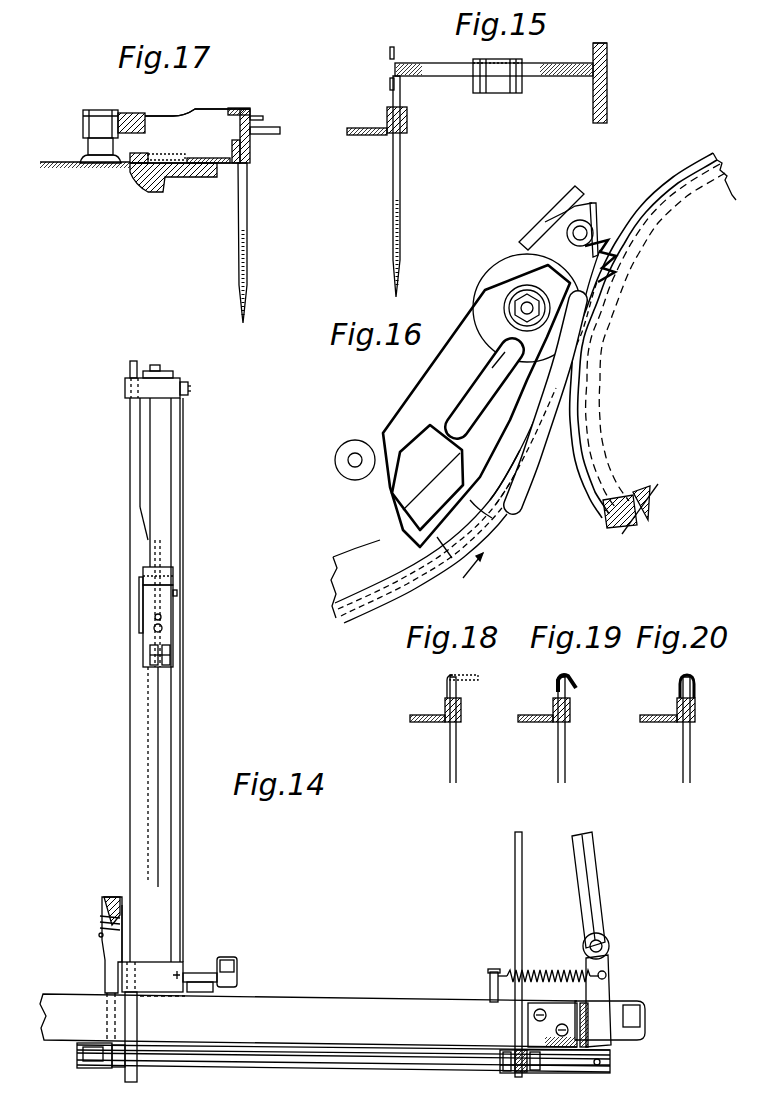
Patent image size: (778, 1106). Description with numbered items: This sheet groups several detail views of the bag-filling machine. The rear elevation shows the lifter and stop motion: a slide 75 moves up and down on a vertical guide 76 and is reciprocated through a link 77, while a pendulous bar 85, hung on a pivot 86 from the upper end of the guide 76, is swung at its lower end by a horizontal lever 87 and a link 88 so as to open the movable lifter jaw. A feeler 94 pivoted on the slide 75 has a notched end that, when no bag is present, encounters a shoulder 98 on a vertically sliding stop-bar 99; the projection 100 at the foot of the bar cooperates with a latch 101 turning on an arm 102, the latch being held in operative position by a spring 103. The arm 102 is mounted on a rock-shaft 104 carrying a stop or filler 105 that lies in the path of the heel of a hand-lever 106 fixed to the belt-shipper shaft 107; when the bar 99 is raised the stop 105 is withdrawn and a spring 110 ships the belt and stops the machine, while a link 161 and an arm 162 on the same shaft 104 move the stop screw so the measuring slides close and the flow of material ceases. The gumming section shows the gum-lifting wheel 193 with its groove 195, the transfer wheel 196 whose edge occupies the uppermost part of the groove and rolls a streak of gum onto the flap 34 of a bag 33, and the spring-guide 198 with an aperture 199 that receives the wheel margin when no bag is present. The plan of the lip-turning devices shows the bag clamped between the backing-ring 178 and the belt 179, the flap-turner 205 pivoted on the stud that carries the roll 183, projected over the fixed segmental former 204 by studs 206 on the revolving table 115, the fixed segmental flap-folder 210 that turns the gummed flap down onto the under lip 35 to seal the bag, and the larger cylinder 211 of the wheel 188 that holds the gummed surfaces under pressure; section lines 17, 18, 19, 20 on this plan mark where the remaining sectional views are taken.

In FIG. 16, the section line 17 is at (341, 447).
In FIG. 16, the section line 18 is at (505, 492).
In FIG. 16, the section line 19 is at (550, 476).
In FIG. 16, the section line 20 is at (590, 407).
In FIG. 17, the bag 33 is at (249, 220).
In FIG. 18, the bag 33 is at (458, 760).
In FIG. 19, the bag 33 is at (566, 760).
In FIG. 20, the bag 33 is at (690, 762).
In FIG. 17, the flap 34 is at (264, 115).
In FIG. 16, the flap 34 is at (457, 572).
In FIG. 18, the flap 34 is at (462, 681).
In FIG. 18, the under lip 35 is at (459, 688).
In FIG. 14, the slide 75 is at (165, 612).
In FIG. 14, the vertical guide 76 is at (160, 465).
In FIG. 14, the link 77 is at (160, 848).
In FIG. 14, the pendulous bar 85 is at (184, 448).
In FIG. 14, the pivot 86 is at (191, 388).
In FIG. 14, the horizontal lever 87 is at (237, 977).
In FIG. 14, the link 88 is at (232, 958).
In FIG. 14, the feeler 94 is at (140, 612).
In FIG. 14, the shoulder 98 is at (143, 570).
In FIG. 14, the stop-bar 99 is at (130, 746).
In FIG. 14, the projection 100 is at (123, 895).
In FIG. 14, the latch 101 is at (108, 900).
In FIG. 14, the arm 102 is at (103, 946).
In FIG. 14, the spring 103 is at (100, 921).
In FIG. 14, the rock-shaft 104 is at (275, 1073).
In FIG. 14, the stop or filler 105 is at (595, 1030).
In FIG. 14, the hand-lever 106 is at (600, 905).
In FIG. 14, the shaft 107 is at (609, 947).
In FIG. 14, the spring 110 is at (538, 970).
In FIG. 17, the wheel or table 115 is at (173, 188).
In FIG. 14, the link 161 is at (515, 899).
In FIG. 14, the arm 162 is at (535, 1074).
In FIG. 17, the backing-ring 178 is at (226, 158).
In FIG. 15, the backing-ring 178 is at (388, 120).
In FIG. 16, the backing-ring 178 is at (345, 575).
In FIG. 15, the belt 179 is at (408, 124).
In FIG. 16, the belt 179 is at (336, 622).
In FIG. 16, the roller 183 is at (500, 282).
In FIG. 16, the wheel 188 is at (636, 518).
In FIG. 15, the gum-lifting wheel 193 is at (608, 93).
In FIG. 15, the groove 195 is at (605, 60).
In FIG. 15, the transfer wheel 196 is at (431, 63).
In FIG. 15, the spring-guide 198 is at (391, 50).
In FIG. 15, the aperture 199 is at (389, 68).
In FIG. 17, the fixed segmental former 204 is at (258, 135).
In FIG. 16, the fixed segmental former 204 is at (490, 510).
In FIG. 17, the flap-turner 205 is at (181, 115).
In FIG. 16, the flap-turner 205 is at (410, 424).
In FIG. 17, the stud 206 is at (84, 122).
In FIG. 16, the stud 206 is at (352, 472).
In FIG. 16, the fixed segmental flap-folder 210 is at (520, 490).
In FIG. 18, the fixed segmental flap-folder 210 is at (448, 680).
In FIG. 19, the fixed segmental flap-folder 210 is at (556, 680).
In FIG. 20, the fixed segmental flap-folder 210 is at (696, 686).
In FIG. 16, the larger cylinder 211 is at (599, 522).